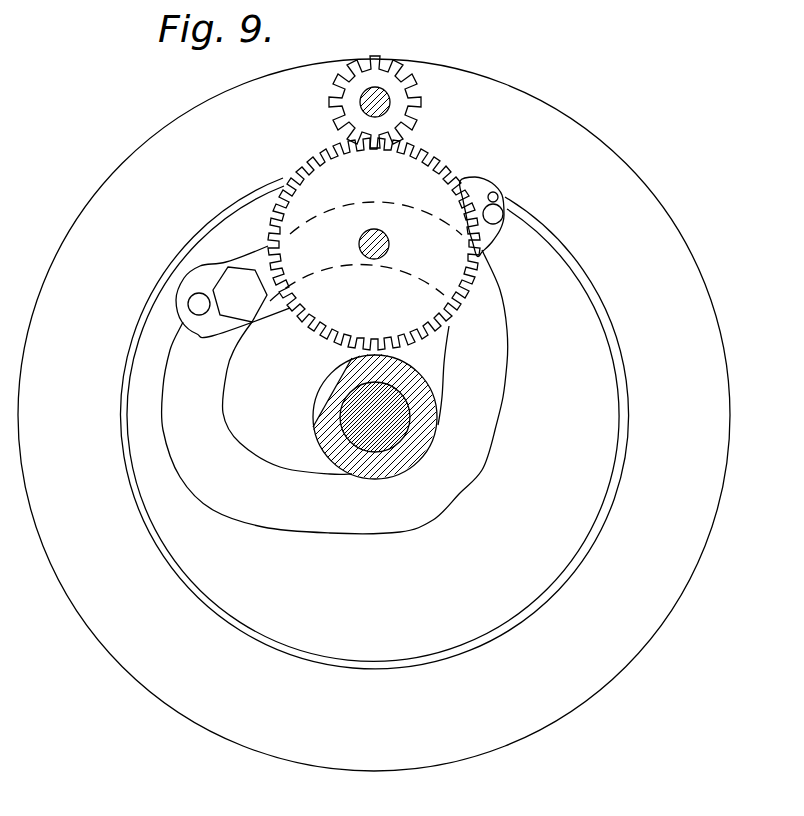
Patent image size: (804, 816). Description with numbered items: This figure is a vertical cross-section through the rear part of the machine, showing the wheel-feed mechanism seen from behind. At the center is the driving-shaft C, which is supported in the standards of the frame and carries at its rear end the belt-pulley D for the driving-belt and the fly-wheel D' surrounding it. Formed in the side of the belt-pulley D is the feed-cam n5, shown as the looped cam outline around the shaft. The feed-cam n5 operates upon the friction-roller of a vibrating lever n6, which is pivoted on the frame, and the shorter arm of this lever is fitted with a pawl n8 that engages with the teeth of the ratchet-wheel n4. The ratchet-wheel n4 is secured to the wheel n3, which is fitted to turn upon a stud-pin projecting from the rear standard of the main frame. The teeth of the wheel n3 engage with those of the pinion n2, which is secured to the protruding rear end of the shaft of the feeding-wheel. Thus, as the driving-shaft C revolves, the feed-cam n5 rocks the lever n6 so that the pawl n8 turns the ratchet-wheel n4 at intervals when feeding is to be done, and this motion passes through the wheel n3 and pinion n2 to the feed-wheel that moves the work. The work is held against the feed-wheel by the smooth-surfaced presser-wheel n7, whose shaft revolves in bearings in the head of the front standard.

The pinion n2 is at (375, 102).
The wheel n3 is at (366, 235).
The ratchet-wheel n4 is at (365, 244).
The feed-cam n5 is at (334, 390).
The vibrating lever n6 is at (227, 294).
The presser-wheel n7 is at (493, 216).
The pawl n8 is at (481, 217).
The driving-shaft C is at (371, 417).
The belt-pulley D is at (375, 423).
The fly-wheel D' is at (374, 415).